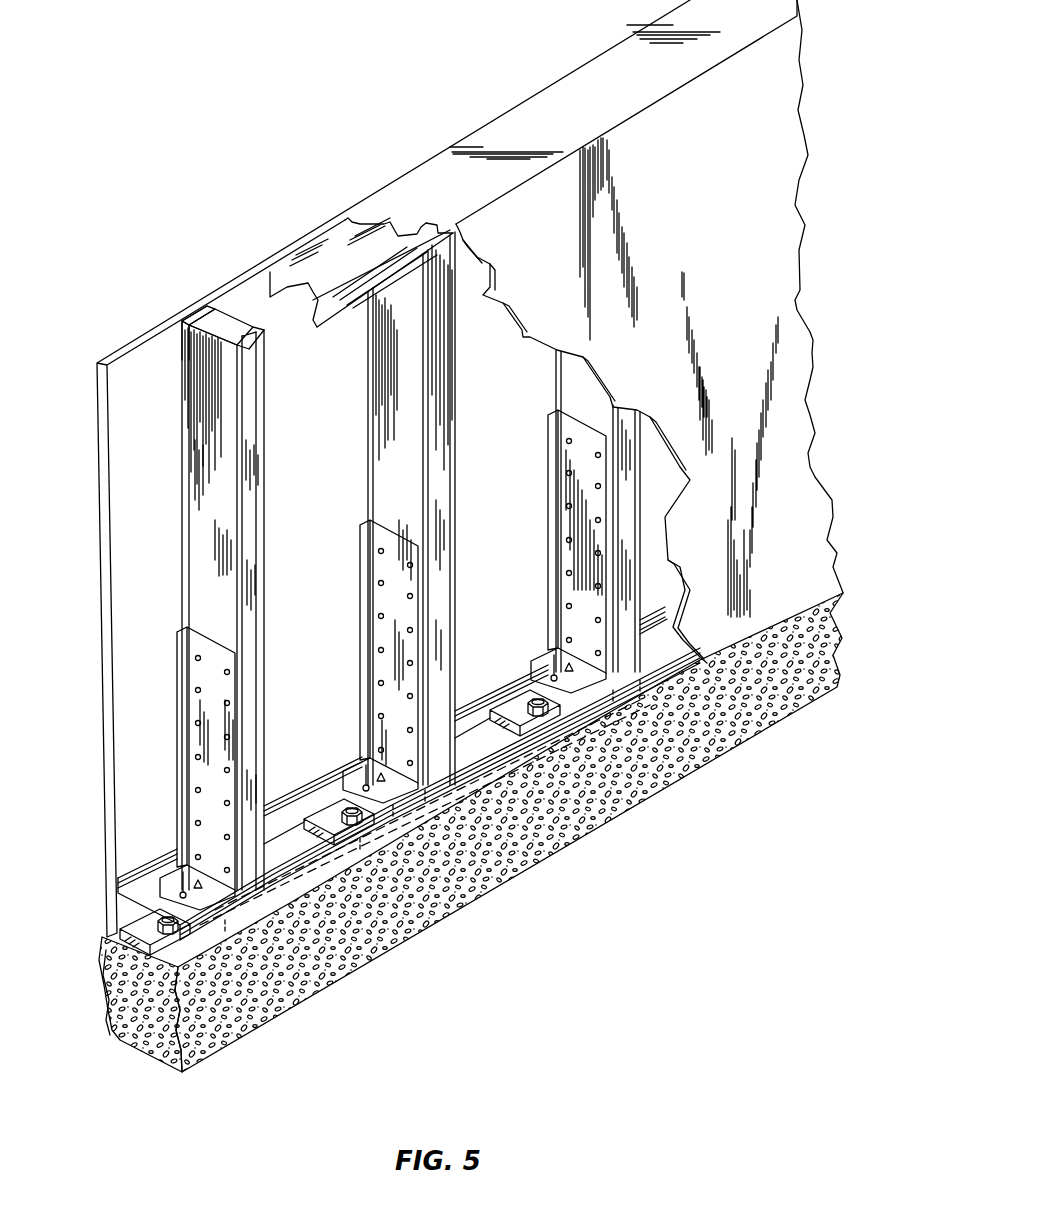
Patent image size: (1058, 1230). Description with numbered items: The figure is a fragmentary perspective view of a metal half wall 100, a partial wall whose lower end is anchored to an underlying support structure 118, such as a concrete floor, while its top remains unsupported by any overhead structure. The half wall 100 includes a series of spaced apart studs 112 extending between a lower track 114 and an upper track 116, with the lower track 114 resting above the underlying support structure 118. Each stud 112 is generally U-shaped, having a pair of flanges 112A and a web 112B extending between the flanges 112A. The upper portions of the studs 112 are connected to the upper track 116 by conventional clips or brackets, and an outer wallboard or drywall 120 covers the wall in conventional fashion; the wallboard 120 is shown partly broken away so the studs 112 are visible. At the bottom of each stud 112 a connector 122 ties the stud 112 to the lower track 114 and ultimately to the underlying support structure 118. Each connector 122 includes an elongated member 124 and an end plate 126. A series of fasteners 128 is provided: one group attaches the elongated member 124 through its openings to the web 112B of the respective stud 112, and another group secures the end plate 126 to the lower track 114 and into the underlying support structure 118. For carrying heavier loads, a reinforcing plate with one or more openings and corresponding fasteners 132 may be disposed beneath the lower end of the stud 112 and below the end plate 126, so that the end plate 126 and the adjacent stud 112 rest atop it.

The metal half wall 100 is at (362, 90).
The stud 112 is at (262, 422).
The flange 112A is at (203, 310).
The web 112B is at (222, 487).
The lower track 114 is at (326, 870).
The upper track 116 is at (340, 243).
The underlying support structure 118 is at (490, 853).
The outer wallboard 120 is at (667, 212).
The connector 122 is at (160, 666).
The elongated member 124 is at (207, 757).
The end plate 126 is at (347, 768).
The fasteners 128 is at (181, 868).
The fastener 132 is at (150, 930).